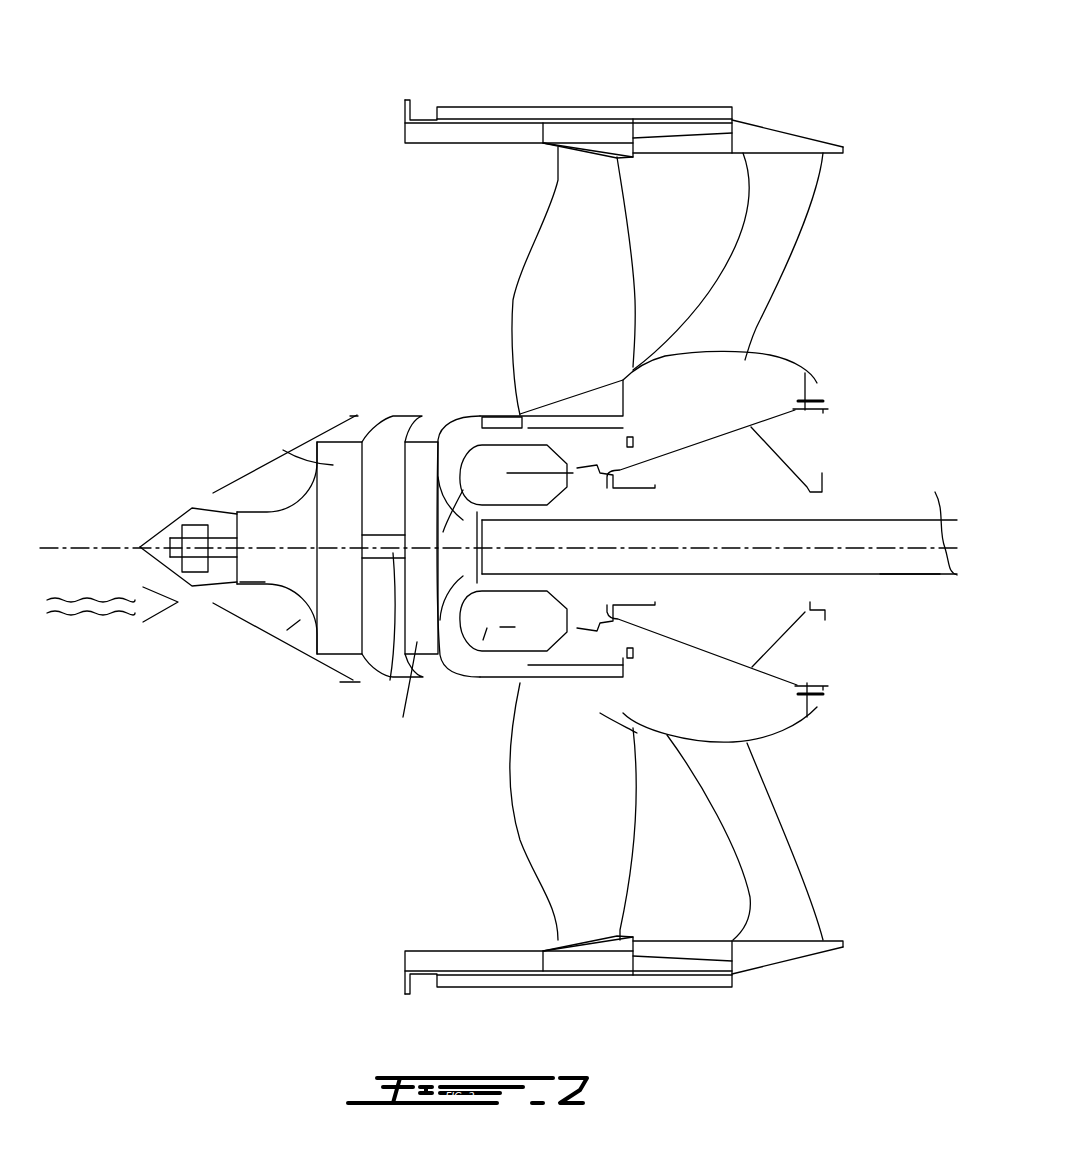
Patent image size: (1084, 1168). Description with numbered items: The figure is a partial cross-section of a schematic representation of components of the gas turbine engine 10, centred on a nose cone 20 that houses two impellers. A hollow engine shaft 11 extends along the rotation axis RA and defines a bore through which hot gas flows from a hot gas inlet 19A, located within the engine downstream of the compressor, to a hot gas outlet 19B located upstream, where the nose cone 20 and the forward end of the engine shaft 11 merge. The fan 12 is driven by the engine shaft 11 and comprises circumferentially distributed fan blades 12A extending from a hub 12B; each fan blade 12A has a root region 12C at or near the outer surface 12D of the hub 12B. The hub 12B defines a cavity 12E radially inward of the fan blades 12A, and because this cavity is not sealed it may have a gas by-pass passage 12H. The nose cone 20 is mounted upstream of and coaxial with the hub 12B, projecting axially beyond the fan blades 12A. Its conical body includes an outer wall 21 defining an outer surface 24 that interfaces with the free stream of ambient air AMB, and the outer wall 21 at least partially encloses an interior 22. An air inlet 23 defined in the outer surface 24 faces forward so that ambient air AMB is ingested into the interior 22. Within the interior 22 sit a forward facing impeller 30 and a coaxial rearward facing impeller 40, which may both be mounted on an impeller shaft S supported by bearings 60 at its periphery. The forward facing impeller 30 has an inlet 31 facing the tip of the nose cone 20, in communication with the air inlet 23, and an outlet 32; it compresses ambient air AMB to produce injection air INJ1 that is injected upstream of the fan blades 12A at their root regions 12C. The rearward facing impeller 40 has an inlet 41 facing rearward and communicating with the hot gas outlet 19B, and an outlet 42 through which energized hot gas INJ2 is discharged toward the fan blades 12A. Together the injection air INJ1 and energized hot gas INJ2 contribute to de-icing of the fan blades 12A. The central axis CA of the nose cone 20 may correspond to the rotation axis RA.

The gas turbine engine 10 is at (856, 228).
The engine shaft 11 is at (890, 520).
The fan 12 is at (468, 236).
The fan blades 12A is at (562, 228).
The hub 12B is at (535, 428).
The root region 12C is at (590, 385).
The outer surface 12D is at (572, 392).
The cavity 12E is at (510, 473).
The gas by-pass passage 12H is at (483, 640).
The hot gas inlet 19A is at (908, 590).
The hot gas outlet 19B is at (507, 627).
The nose cone 20 is at (233, 473).
The outer wall 21 is at (338, 652).
The interior 22 is at (253, 613).
The air inlet 23 is at (187, 607).
The outer surface 24 is at (287, 630).
The forward facing impeller 30 is at (283, 450).
The inlet 31 is at (237, 517).
The outlet 32 is at (350, 435).
The rearward facing impeller 40 is at (418, 642).
The inlet 41 is at (487, 532).
The outlet 42 is at (432, 654).
The bearings 60 is at (145, 552).
The central axis CA is at (68, 545).
The rotation axis RA is at (940, 520).
The ambient air AMB is at (111, 616).
The injection air INJ1 is at (410, 397).
The energized hot gas INJ2 is at (478, 397).
The impeller shaft S is at (350, 690).